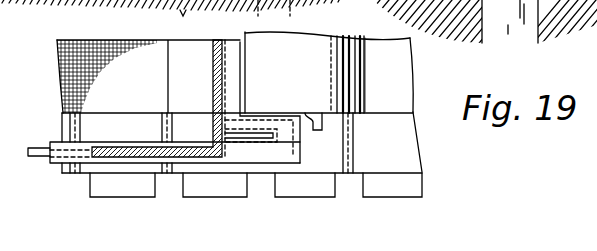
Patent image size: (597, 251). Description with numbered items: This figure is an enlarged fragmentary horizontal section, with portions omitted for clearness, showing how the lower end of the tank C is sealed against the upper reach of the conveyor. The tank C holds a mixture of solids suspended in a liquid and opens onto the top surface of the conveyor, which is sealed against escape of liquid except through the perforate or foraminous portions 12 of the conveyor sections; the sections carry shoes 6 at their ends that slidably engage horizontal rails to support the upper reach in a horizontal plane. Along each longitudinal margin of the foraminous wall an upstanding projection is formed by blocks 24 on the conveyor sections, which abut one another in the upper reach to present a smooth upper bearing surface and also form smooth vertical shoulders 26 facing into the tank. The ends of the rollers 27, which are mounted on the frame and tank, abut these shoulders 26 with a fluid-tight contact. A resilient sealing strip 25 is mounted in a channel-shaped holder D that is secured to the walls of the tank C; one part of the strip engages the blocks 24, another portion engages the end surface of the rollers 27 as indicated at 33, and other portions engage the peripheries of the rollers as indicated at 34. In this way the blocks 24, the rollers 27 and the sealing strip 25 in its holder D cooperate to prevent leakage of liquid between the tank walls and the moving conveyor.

The shoes 6 is at (415, 185).
The foraminous portions 12 is at (133, 23).
The blocks 24 is at (125, 118).
The resilient sealing element 25 is at (40, 165).
The vertical shoulders 26 is at (393, 108).
The rollers 27 is at (336, 43).
The strip portion engaging roller end surface 33 is at (297, 98).
The strip portion engaging roller periphery 34 is at (243, 62).
The tank C is at (212, 48).
The channel-shaped holder D is at (56, 136).